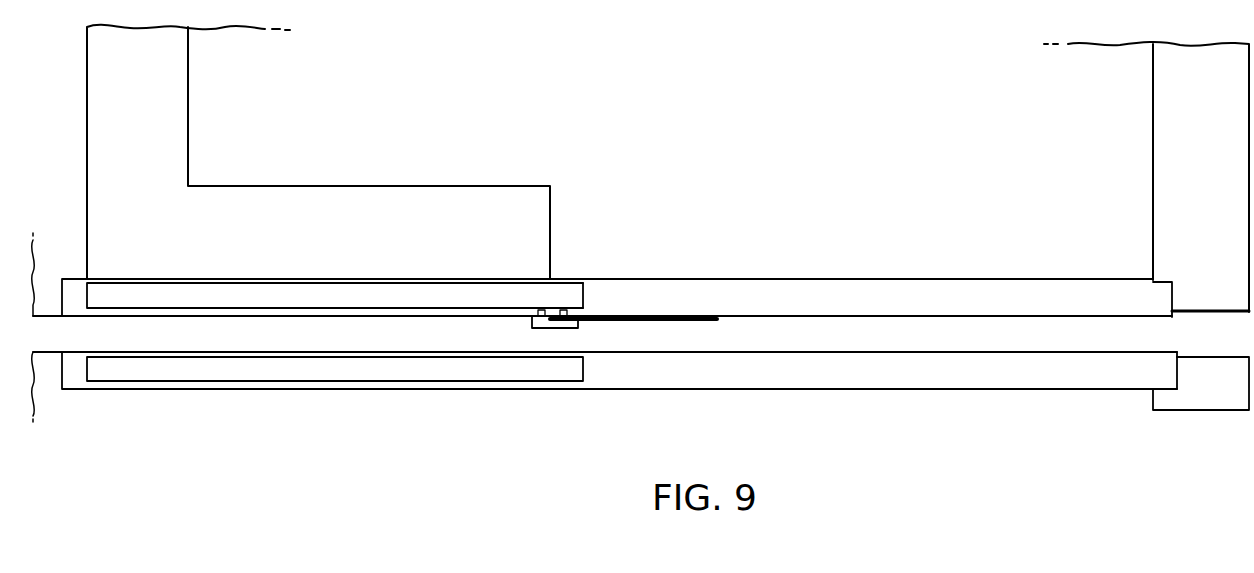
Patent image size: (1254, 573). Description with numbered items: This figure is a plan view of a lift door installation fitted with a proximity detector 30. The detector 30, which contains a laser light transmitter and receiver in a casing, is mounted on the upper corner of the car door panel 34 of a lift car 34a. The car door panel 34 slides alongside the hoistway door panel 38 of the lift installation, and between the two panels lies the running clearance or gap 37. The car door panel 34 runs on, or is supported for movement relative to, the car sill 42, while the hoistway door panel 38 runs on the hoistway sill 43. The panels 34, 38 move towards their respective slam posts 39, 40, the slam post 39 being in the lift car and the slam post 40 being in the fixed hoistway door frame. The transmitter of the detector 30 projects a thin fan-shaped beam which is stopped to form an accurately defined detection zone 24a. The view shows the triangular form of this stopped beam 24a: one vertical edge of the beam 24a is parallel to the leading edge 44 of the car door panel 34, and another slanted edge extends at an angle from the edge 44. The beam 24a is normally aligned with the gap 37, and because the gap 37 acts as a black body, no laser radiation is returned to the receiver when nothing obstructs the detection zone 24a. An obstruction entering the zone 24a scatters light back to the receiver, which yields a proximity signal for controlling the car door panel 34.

The lift car 34a is at (717, 117).
The car door panel 34 is at (320, 293).
The hoistway door panel 38 is at (318, 370).
The proximity detector 30 is at (547, 322).
The leading edge 44 is at (583, 296).
The running clearance or gap 37 is at (830, 332).
The car sill 42 is at (984, 300).
The slam post 39 is at (1172, 298).
The hoistway sill 43 is at (1022, 372).
The slam post 40 is at (1179, 372).
The detection zone 24a is at (683, 323).